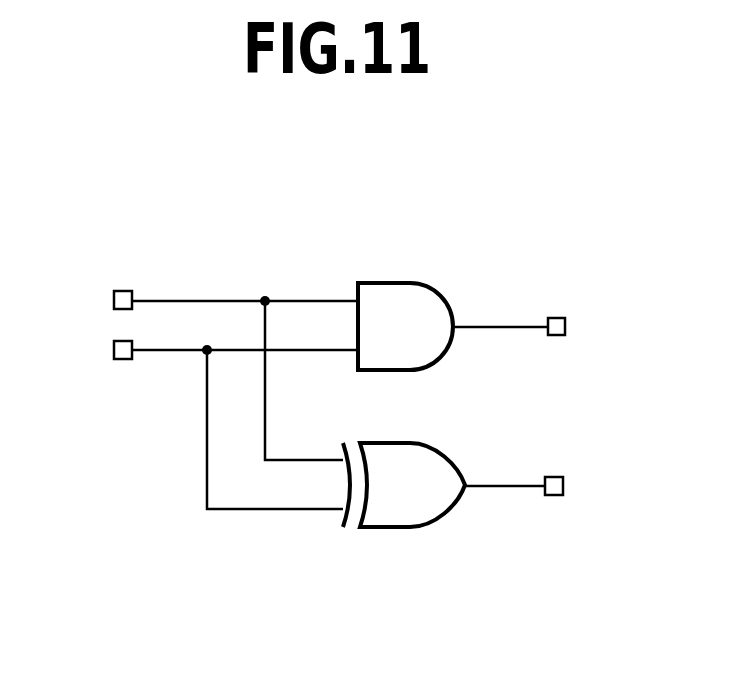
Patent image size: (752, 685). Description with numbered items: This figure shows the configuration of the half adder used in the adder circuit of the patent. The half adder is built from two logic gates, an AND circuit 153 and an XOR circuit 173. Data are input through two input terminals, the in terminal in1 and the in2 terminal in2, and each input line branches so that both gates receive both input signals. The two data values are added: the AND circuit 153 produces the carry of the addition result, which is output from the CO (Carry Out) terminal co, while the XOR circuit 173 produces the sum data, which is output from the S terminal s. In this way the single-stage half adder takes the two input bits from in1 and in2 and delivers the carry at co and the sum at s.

The AND circuit 153 is at (437, 291).
The XOR circuit 173 is at (412, 528).
The in terminal in1 is at (110, 348).
The in2 terminal in2 is at (110, 298).
The CO (Carry Out) terminal co is at (566, 327).
The S terminal s is at (564, 486).